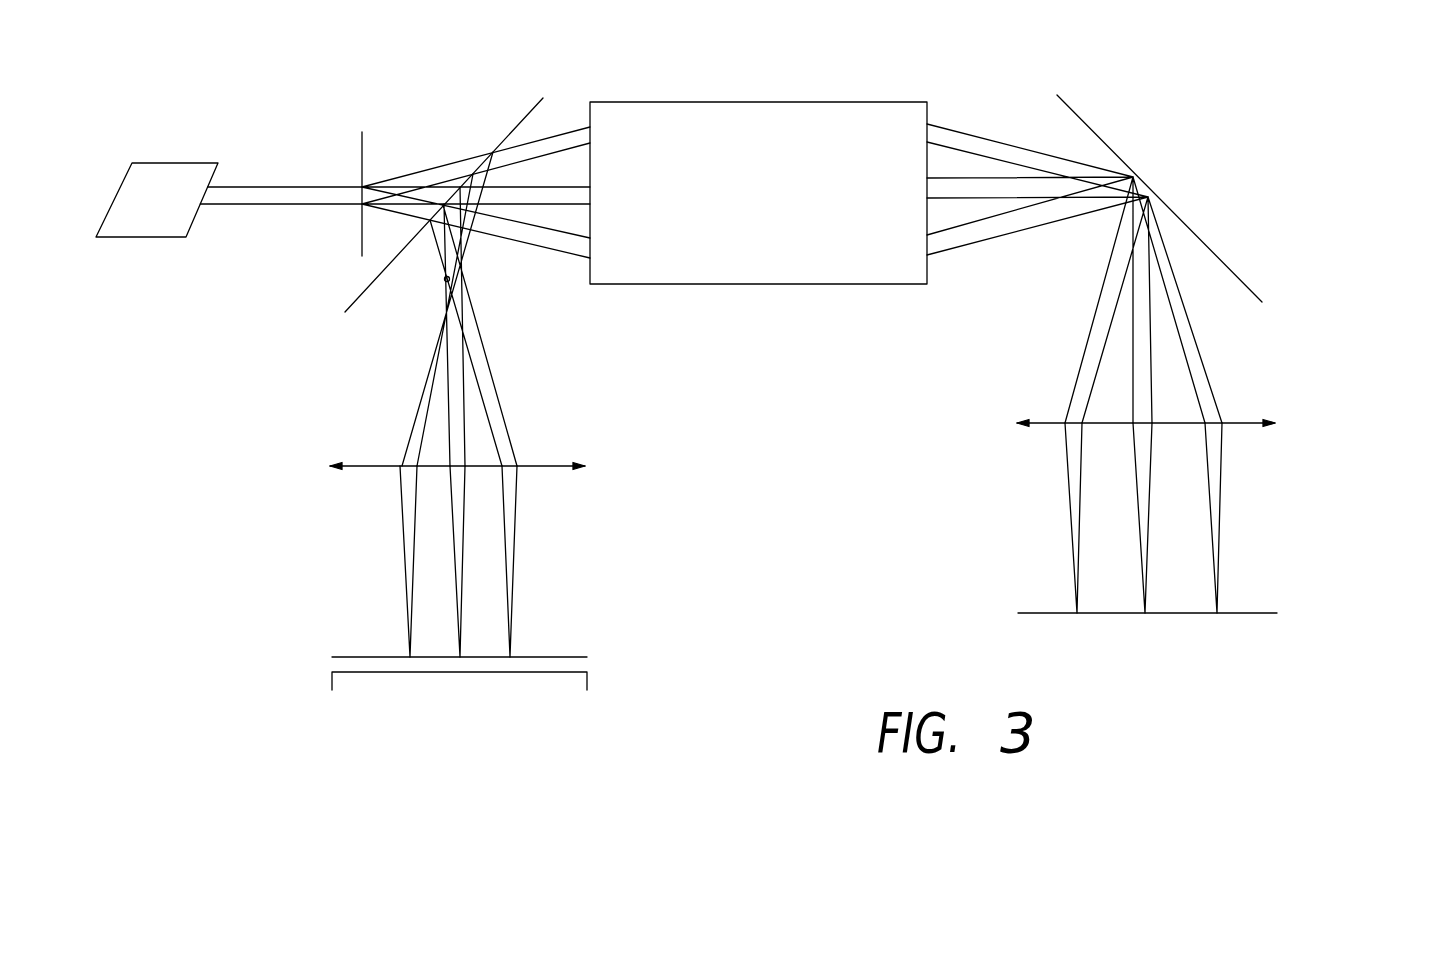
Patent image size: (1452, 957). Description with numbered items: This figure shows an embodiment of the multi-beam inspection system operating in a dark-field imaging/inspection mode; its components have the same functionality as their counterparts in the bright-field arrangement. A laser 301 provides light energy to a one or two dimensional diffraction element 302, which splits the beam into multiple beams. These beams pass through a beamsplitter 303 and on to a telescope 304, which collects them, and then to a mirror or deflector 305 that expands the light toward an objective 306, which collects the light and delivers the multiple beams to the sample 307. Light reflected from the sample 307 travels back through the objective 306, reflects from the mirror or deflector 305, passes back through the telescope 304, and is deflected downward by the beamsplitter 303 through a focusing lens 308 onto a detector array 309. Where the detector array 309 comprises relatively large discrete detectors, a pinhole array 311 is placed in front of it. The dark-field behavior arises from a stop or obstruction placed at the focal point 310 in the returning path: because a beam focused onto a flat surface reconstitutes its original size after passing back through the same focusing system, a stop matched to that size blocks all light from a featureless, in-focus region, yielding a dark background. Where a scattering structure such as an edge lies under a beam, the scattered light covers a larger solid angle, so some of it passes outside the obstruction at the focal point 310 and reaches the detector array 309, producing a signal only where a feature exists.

The laser 301 is at (176, 162).
The diffraction element 302 is at (360, 148).
The beamsplitter 303 is at (527, 108).
The telescope 304 is at (782, 207).
The mirror or deflector 305 is at (1081, 116).
The objective 306 is at (1053, 421).
The sample 307 is at (1286, 609).
The focusing lens 308 is at (542, 462).
The detector array 309 is at (593, 662).
The focal point 310 is at (444, 279).
The pinhole array 311 is at (359, 654).